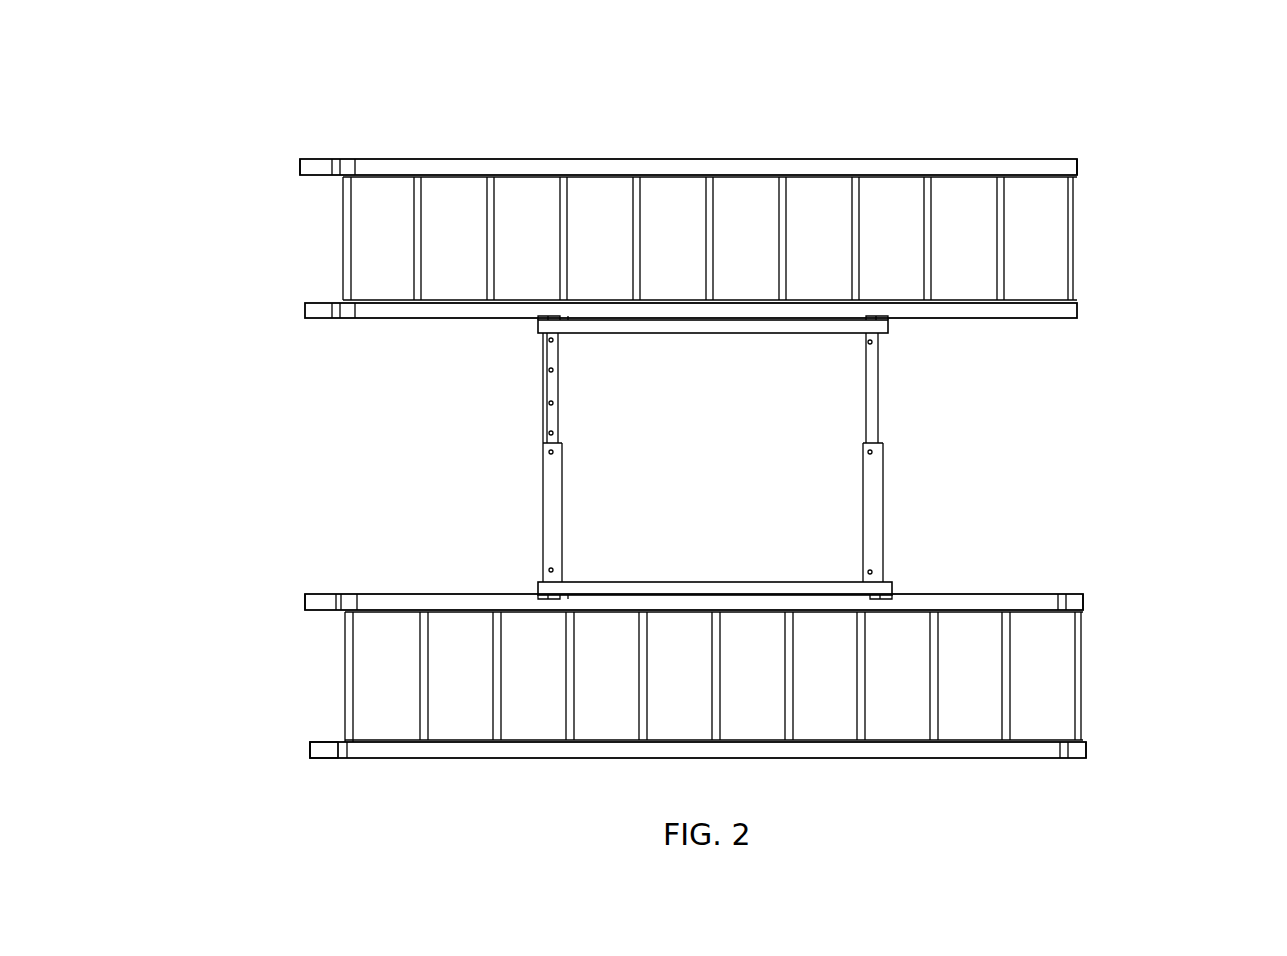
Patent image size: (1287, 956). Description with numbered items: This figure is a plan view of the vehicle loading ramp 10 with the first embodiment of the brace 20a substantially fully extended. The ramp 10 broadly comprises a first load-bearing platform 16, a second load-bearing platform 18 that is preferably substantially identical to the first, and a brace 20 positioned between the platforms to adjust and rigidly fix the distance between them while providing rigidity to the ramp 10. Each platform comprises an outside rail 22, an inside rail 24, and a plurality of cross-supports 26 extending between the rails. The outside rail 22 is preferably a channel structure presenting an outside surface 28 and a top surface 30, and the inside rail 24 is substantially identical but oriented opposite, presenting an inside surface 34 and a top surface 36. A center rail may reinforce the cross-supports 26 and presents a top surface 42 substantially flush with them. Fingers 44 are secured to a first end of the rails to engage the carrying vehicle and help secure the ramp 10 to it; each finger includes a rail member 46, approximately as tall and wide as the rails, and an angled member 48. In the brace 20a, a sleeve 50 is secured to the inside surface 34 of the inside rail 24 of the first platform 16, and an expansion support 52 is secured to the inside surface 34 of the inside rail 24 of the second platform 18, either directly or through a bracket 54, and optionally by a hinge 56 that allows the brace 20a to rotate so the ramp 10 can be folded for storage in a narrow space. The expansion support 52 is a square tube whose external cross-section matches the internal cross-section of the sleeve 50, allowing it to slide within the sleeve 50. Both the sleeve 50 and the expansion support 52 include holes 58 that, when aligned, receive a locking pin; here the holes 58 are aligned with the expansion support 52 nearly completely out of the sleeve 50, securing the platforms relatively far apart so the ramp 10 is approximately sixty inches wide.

The vehicle loading ramp 10 is at (1205, 280).
The first load-bearing platform 16 is at (588, 770).
The second load-bearing platform 18 is at (997, 140).
The brace 20 is at (305, 445).
The first embodiment of the brace 20a is at (925, 495).
The outside rail 22 is at (584, 156).
The inside rail 24 is at (1032, 335).
The cross-supports 26 is at (1100, 720).
The outside surface 28 is at (381, 160).
The top surface 30 is at (451, 160).
The inside surface 34 is at (372, 323).
The top surface 36 is at (425, 318).
The top surface 42 is at (1083, 670).
The fingers 44 is at (318, 582).
The rail member 46 is at (345, 757).
The angled member 48 is at (318, 755).
The sleeve 50 is at (552, 510).
The expansion support 52 is at (527, 381).
The bracket 54 is at (803, 325).
The hinge 56 is at (868, 324).
The holes 58 is at (552, 449).